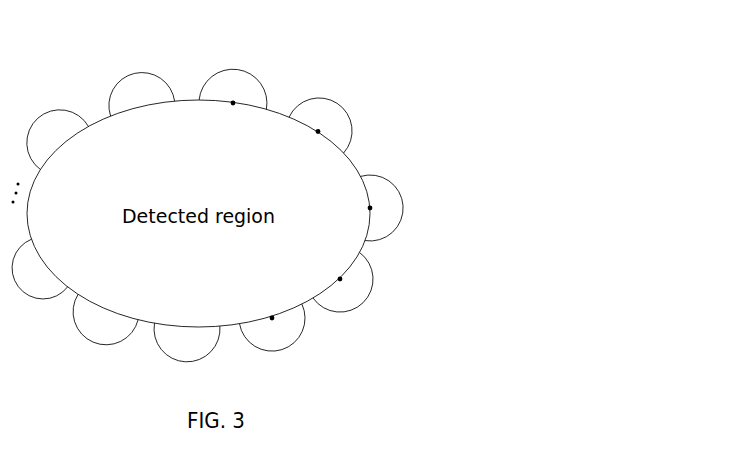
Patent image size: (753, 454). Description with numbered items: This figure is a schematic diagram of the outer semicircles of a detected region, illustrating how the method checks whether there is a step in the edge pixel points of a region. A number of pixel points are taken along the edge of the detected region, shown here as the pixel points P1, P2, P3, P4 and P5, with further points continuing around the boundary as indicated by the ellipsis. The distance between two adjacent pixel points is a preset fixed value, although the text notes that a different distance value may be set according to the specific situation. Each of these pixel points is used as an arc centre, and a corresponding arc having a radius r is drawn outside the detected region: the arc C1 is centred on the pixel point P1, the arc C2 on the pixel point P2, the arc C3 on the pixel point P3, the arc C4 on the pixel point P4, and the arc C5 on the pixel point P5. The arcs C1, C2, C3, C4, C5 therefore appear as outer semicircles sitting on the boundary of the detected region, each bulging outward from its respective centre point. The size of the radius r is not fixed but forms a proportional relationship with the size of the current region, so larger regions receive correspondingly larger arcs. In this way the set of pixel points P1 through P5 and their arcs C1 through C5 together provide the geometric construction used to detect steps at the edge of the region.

The arc C1 is at (233, 74).
The arc C2 is at (335, 124).
The arc C3 is at (399, 208).
The arc C4 is at (359, 283).
The arc C5 is at (283, 337).
The pixel point P1 is at (237, 117).
The pixel point P2 is at (305, 145).
The pixel point P3 is at (356, 208).
The pixel point P4 is at (324, 276).
The pixel point P5 is at (258, 306).